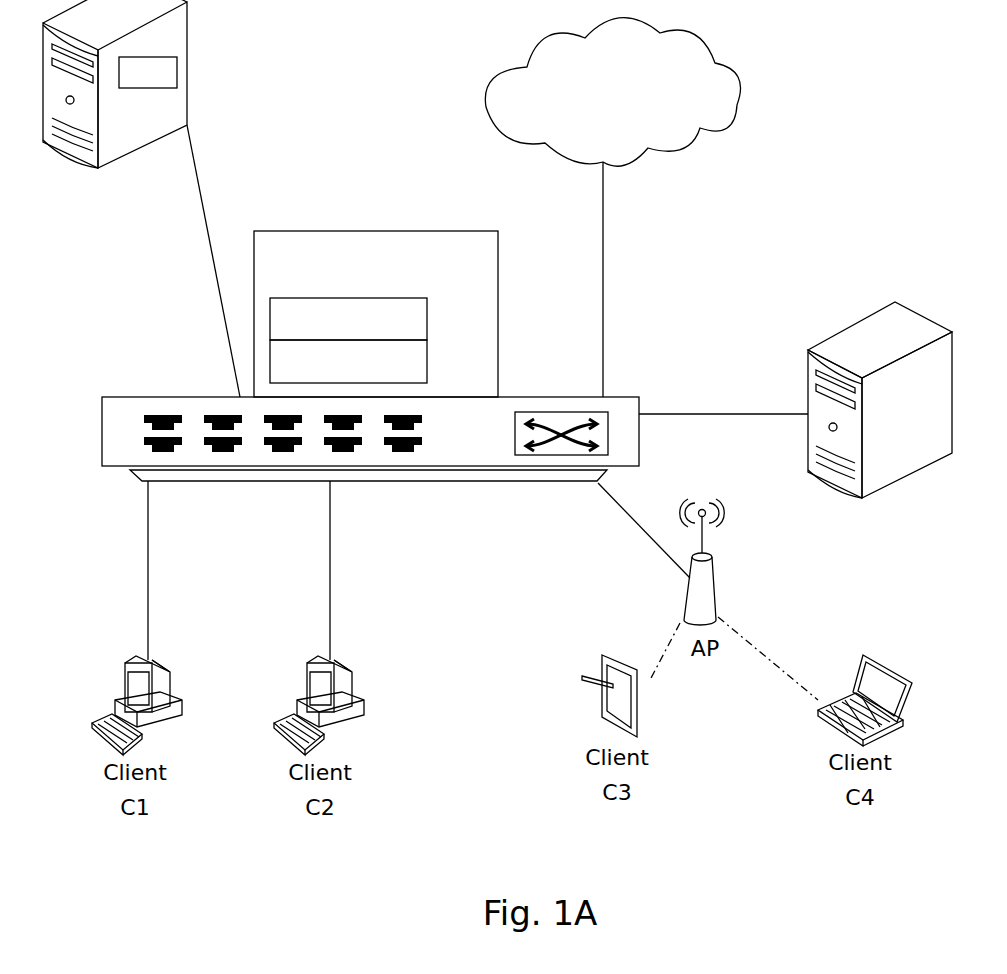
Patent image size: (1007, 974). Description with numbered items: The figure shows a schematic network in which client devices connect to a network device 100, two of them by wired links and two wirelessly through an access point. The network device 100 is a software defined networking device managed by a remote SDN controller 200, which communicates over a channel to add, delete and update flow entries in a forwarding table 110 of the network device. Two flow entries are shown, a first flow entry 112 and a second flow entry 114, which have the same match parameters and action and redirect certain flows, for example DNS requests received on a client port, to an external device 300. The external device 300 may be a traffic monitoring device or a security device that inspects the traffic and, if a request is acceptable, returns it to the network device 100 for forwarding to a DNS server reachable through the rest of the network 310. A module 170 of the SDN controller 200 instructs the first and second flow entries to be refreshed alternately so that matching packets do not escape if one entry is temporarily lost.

The network device 100 is at (370, 477).
The forwarding table 110 is at (376, 314).
The first flow entry 112 is at (348, 319).
The second flow entry 114 is at (348, 361).
The module 170 is at (148, 72).
The SDN controller 200 is at (115, 135).
The external device 300 is at (878, 467).
The rest of the network 310 is at (612, 92).